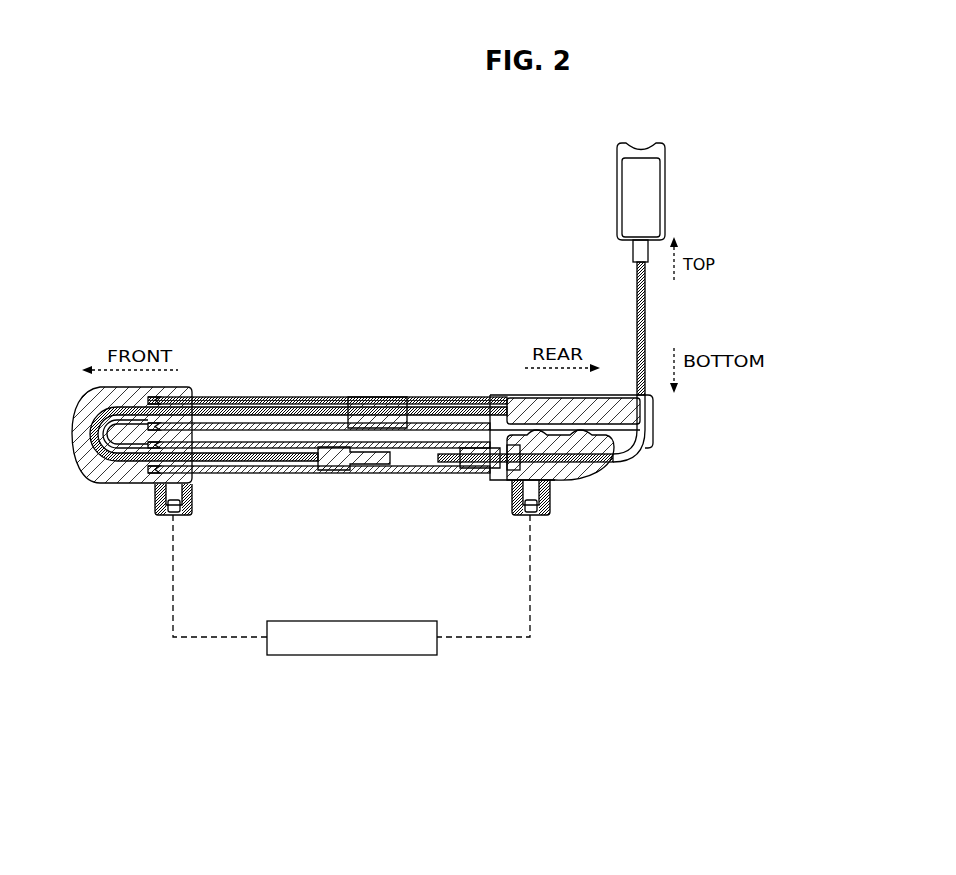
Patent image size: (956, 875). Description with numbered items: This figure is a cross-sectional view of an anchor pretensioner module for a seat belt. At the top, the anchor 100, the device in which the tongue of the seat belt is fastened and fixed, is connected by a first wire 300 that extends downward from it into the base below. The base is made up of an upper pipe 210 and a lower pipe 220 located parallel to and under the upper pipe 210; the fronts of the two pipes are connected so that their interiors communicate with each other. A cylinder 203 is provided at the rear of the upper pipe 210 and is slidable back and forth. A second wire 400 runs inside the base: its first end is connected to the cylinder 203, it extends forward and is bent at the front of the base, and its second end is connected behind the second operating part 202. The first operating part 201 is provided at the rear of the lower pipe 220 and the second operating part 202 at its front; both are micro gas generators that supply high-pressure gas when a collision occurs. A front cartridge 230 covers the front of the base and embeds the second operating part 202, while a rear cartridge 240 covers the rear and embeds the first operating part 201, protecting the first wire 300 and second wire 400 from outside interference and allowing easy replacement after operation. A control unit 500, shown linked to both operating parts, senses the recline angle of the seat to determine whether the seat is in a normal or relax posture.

The anchor 100 is at (627, 195).
The first wire 300 is at (638, 290).
The upper pipe 210 is at (222, 397).
The second wire 400 is at (316, 397).
The cylinder 203 is at (392, 397).
The lower pipe 220 is at (292, 478).
The front cartridge 230 is at (86, 468).
The rear cartridge 240 is at (650, 445).
The first operating part 201 is at (550, 505).
The second operating part 202 is at (157, 513).
The control unit 500 is at (360, 656).